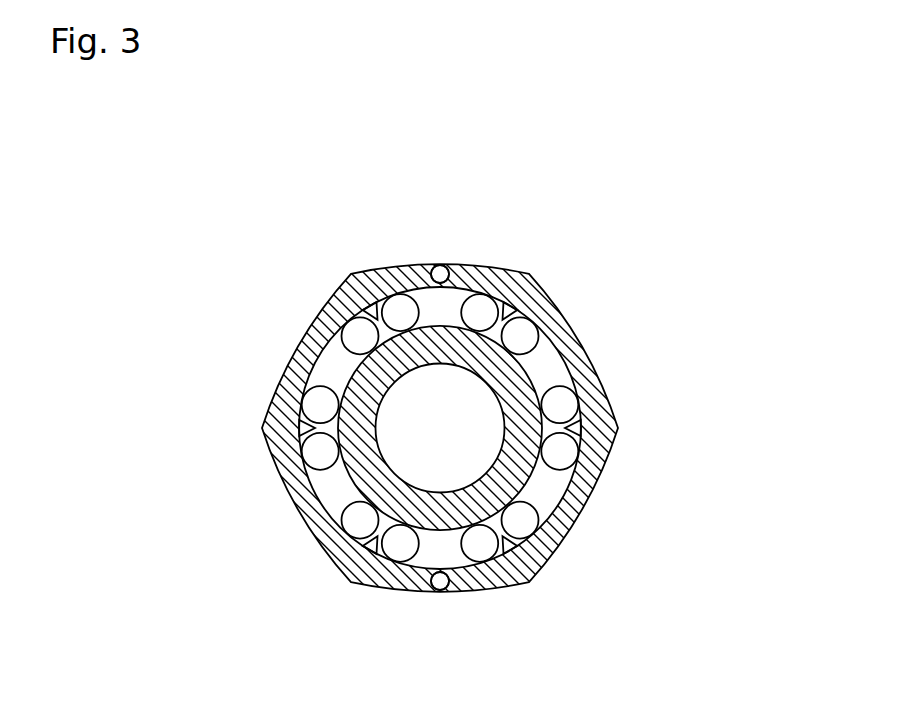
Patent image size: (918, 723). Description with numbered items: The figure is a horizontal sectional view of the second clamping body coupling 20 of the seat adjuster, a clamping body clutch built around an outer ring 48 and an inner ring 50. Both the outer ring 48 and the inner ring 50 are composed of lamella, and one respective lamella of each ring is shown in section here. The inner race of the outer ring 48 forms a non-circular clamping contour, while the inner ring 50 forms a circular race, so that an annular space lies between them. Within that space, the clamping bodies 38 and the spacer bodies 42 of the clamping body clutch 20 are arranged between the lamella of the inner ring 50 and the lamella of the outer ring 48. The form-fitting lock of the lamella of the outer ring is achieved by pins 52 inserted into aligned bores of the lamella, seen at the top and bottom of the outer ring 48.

The second clamping body coupling 20 is at (741, 355).
The clamping bodies 38 is at (523, 334).
The spacer bodies 42 is at (504, 552).
The outer ring 48 is at (501, 268).
The inner ring 50 is at (462, 366).
The pins 52 is at (437, 266).